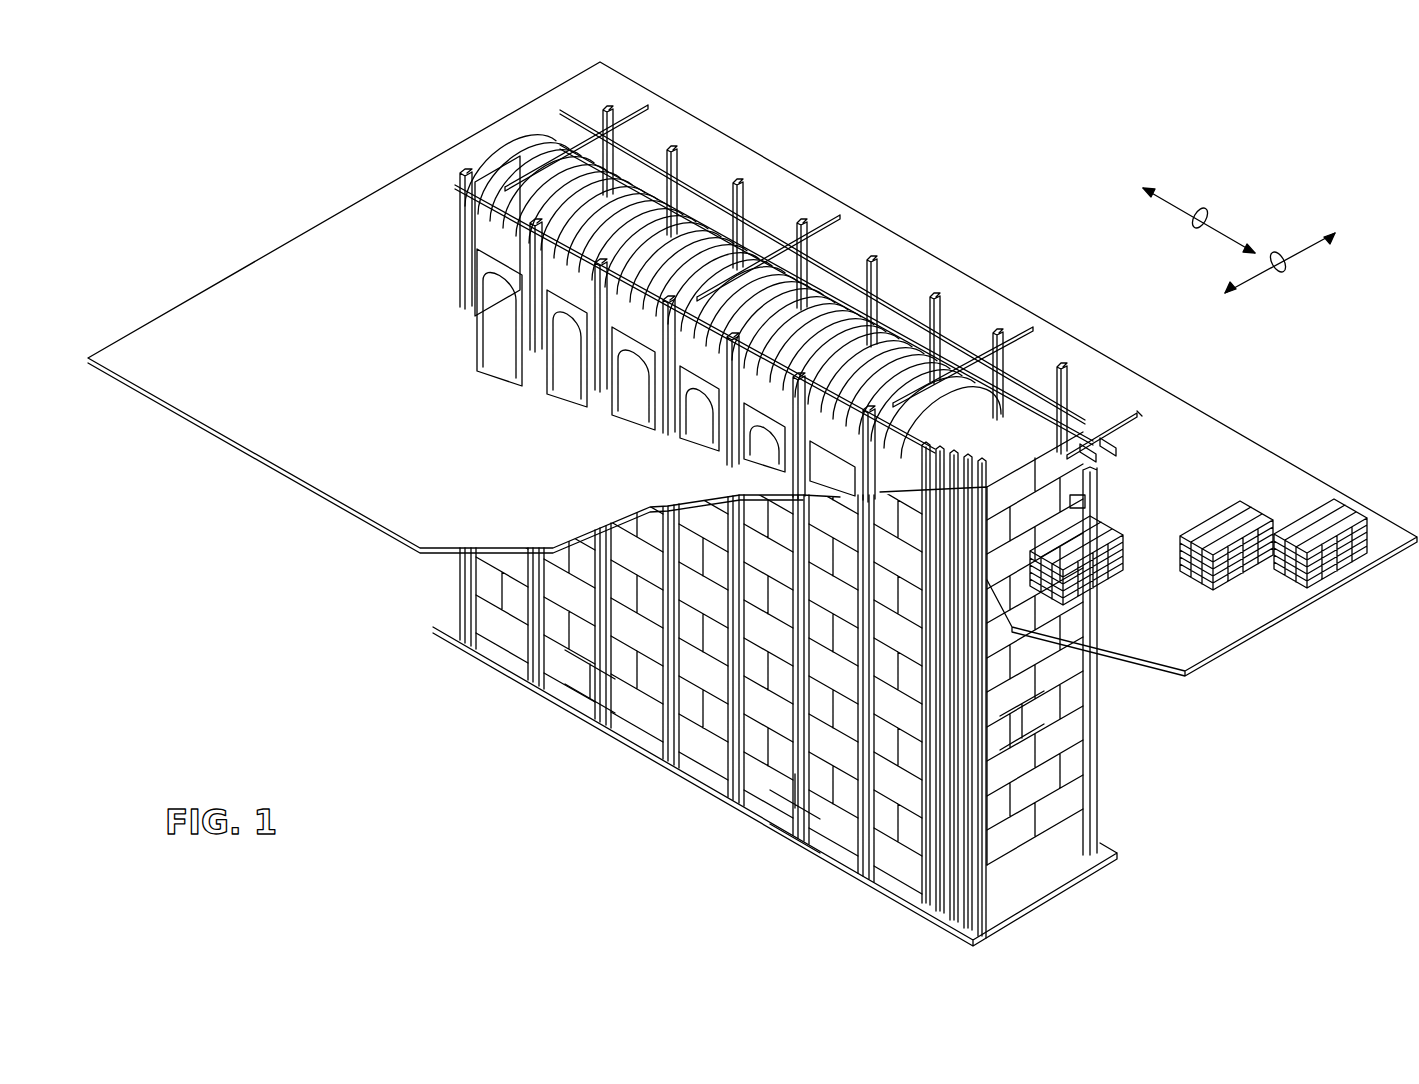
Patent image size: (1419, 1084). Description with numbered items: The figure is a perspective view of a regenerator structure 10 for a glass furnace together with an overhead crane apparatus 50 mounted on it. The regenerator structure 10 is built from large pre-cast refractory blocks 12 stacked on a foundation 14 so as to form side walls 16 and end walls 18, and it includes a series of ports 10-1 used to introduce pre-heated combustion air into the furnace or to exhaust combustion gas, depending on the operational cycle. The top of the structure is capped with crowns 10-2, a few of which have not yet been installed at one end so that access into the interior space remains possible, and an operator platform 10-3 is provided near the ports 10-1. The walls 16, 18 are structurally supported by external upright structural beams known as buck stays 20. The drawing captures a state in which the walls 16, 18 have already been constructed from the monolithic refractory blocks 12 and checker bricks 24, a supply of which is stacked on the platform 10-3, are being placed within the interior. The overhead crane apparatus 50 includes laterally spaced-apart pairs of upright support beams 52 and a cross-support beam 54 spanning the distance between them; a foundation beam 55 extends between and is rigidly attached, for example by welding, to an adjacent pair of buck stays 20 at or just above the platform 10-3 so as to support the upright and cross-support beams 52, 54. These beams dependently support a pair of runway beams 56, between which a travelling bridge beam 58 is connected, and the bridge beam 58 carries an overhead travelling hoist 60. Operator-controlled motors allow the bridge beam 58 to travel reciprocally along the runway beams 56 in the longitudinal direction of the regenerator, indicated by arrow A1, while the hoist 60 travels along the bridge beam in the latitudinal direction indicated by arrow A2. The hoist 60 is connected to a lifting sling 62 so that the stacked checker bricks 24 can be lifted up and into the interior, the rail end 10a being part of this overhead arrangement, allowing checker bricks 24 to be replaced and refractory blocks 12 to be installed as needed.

The regenerator structure 10 is at (827, 503).
The ports 10-1 is at (803, 664).
The crowns 10-2 is at (809, 285).
The operator platform 10-3 is at (246, 371).
The end rail 10a is at (1120, 418).
The refractory blocks 12 is at (1070, 722).
The foundation 14 is at (1075, 866).
The side walls 16 is at (752, 697).
The end walls 18 is at (1015, 718).
The buck stays 20 is at (610, 125).
The checker bricks 24 is at (1290, 585).
The overhead crane apparatus 50 is at (1150, 430).
The upright support beams 52 is at (670, 130).
The cross-support beam 54 is at (597, 130).
The foundation beam 55 is at (500, 290).
The runway beams 56 is at (500, 155).
The travelling bridge beam 58 is at (1088, 450).
The overhead travelling hoist 60 is at (1116, 450).
The lifting sling 62 is at (1112, 497).
The arrow A1 is at (1200, 210).
The arrow A2 is at (1278, 268).